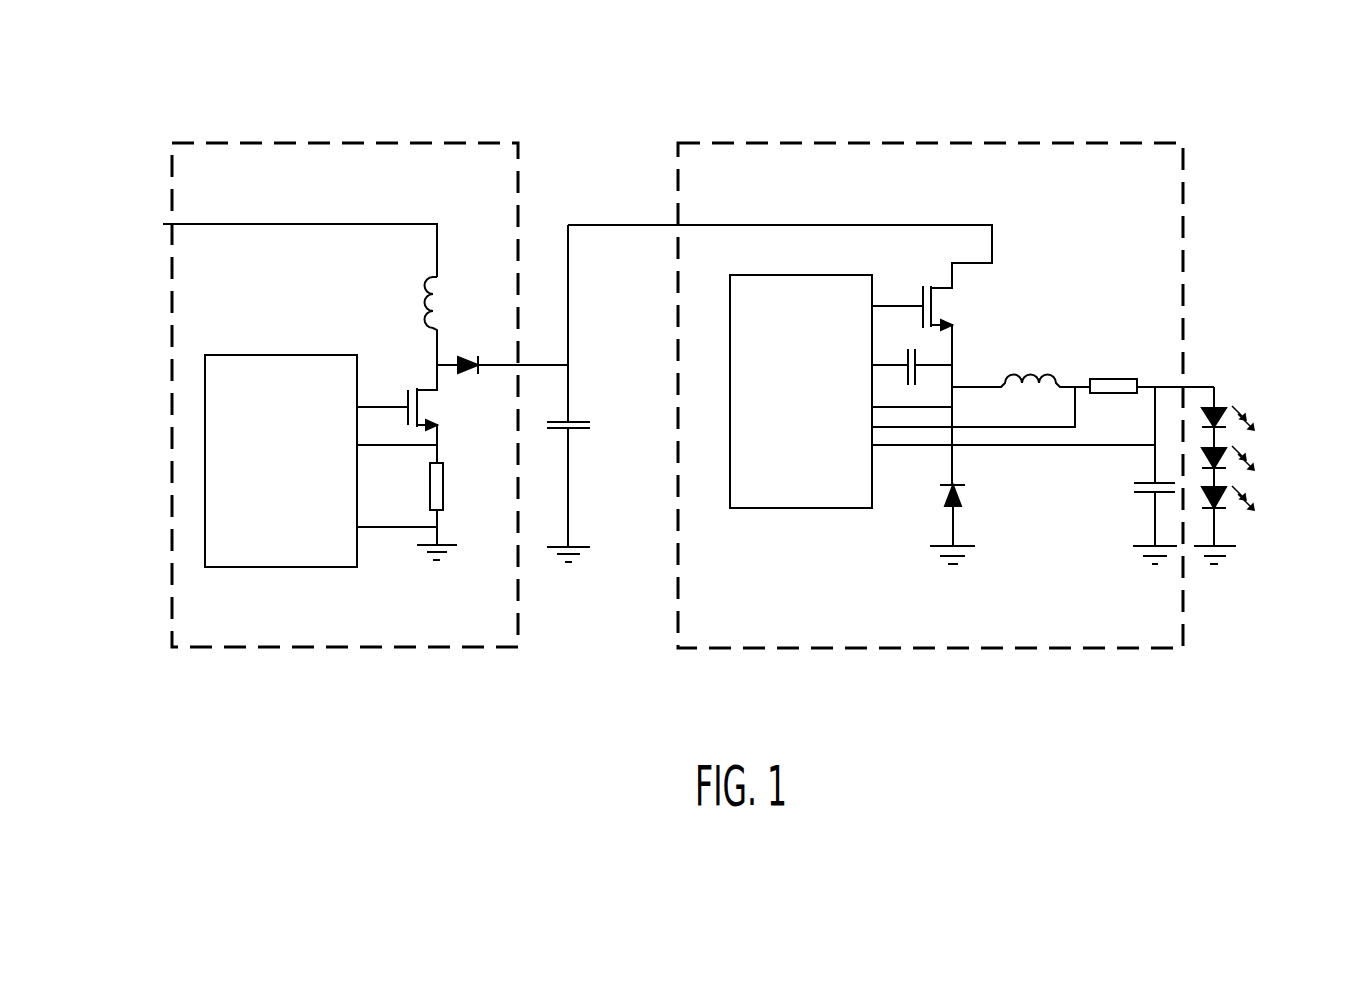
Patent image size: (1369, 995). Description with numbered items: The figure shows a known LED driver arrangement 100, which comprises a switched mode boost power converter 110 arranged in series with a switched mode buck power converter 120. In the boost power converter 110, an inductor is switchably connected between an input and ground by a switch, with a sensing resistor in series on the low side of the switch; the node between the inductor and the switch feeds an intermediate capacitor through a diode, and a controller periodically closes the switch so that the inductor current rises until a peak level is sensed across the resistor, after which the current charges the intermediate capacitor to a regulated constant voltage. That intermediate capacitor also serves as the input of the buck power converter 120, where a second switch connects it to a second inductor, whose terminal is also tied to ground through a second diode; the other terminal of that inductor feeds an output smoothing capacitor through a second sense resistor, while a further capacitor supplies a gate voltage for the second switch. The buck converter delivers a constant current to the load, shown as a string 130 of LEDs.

The LED driver arrangement 100 is at (983, 44).
The switched mode boost power converter 110 is at (226, 185).
The switched mode buck power converter 120 is at (706, 617).
The string of LEDs 130 is at (1255, 460).